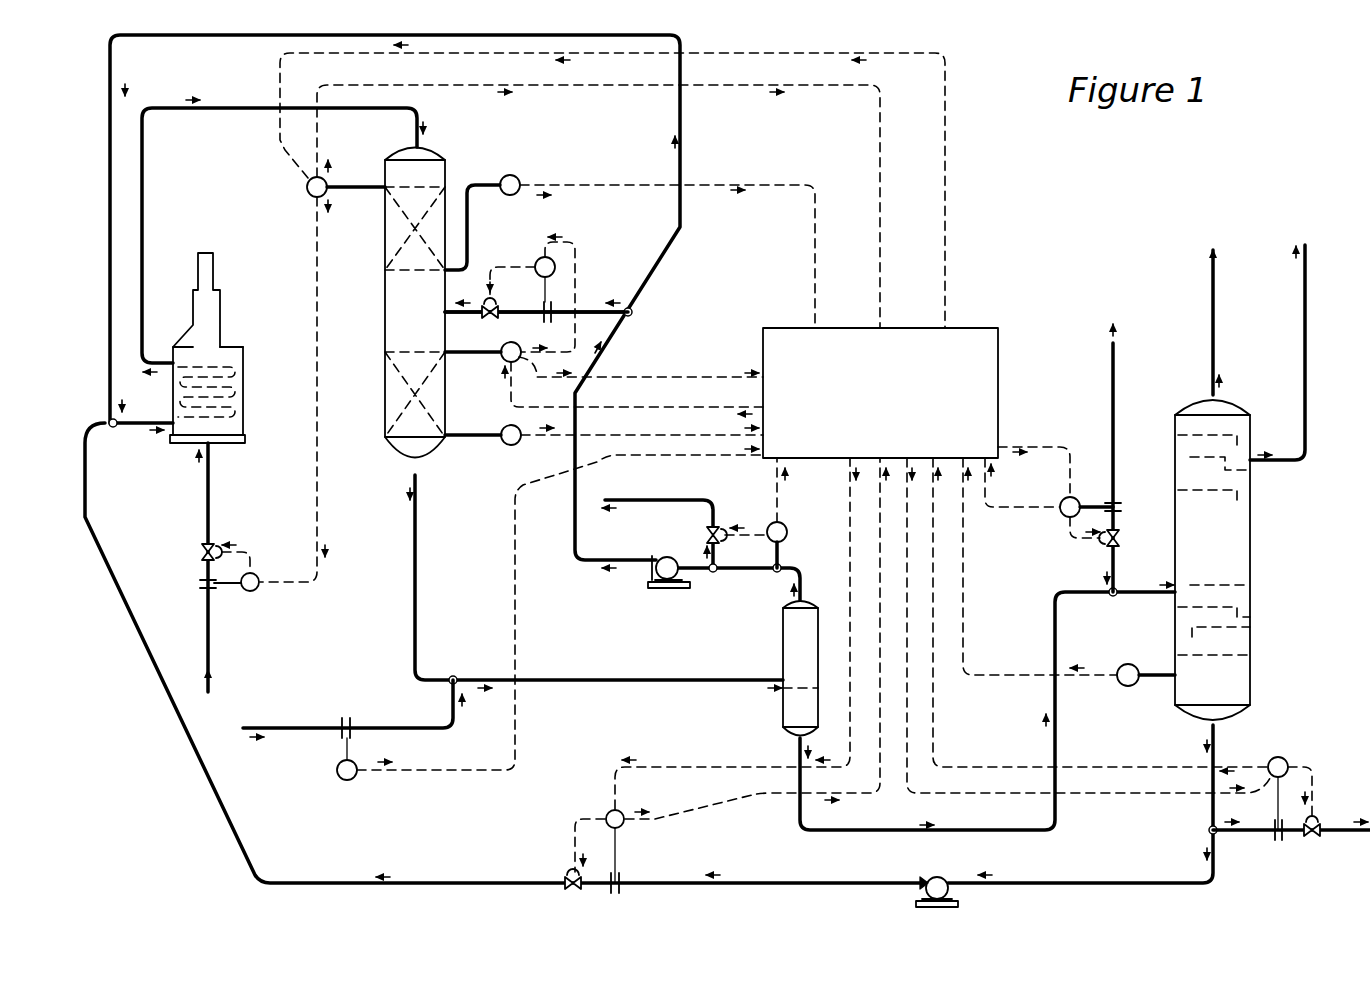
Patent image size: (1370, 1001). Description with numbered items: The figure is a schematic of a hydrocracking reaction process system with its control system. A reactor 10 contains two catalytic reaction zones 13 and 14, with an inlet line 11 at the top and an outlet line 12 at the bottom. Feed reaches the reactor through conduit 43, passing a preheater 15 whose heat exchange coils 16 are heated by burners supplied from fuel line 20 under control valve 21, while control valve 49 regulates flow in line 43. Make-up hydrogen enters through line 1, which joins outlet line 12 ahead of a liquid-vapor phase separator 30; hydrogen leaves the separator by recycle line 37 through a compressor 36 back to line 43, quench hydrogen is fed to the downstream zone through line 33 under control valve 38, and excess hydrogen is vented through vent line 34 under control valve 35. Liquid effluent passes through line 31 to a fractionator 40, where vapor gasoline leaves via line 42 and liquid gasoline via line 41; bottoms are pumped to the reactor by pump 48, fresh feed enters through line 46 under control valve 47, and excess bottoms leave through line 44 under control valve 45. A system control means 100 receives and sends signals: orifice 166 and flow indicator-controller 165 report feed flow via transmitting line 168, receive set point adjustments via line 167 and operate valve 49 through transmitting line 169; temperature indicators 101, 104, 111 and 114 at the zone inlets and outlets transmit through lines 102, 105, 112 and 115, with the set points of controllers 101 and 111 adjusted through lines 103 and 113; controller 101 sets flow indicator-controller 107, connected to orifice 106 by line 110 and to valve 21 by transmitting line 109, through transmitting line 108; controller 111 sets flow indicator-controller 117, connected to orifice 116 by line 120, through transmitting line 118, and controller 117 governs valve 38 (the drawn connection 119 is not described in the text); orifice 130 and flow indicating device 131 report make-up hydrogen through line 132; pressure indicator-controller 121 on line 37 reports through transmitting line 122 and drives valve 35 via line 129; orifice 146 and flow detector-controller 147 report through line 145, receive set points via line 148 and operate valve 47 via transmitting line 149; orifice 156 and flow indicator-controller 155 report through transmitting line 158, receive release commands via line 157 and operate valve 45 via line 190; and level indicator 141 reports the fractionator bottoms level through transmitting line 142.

The make-up hydrogen line 1 is at (298, 733).
The reactor 10 is at (448, 152).
The inlet line 11 is at (419, 116).
The outlet line 12 is at (413, 540).
The reaction zone 13 is at (410, 232).
The reaction zone 14 is at (410, 410).
The preheater 15 is at (232, 338).
The heat exchange coils 16 is at (226, 387).
The fuel line 20 is at (210, 498).
The control valve 21 is at (201, 552).
The liquid-vapor phase separator 30 is at (782, 640).
The line 31 is at (798, 756).
The quench hydrogen line 33 is at (458, 316).
The hydrogen vent line 34 is at (650, 499).
The control valve 35 is at (704, 532).
The compressor 36 is at (672, 590).
The hydrogen recycle line 37 is at (205, 37).
The control valve 38 is at (487, 302).
The fractionator 40 is at (1255, 560).
The line 41 is at (1308, 376).
The line 42 is at (1218, 335).
The conduit 43 is at (95, 470).
The line 44 is at (1240, 838).
The control valve 45 is at (1322, 820).
The line 46 is at (1118, 376).
The control valve 47 is at (1122, 546).
The pump 48 is at (942, 877).
The control valve 49 is at (567, 872).
The system control means 100 is at (970, 328).
The temperature indicator-controller 101 is at (307, 198).
The transmitting line 102 is at (321, 142).
The transmitting line 103 is at (272, 140).
The temperature indicator 104 is at (512, 177).
The transmitting line 105 is at (812, 295).
The orifice 106 is at (203, 592).
The flow indicator-controller 107 is at (256, 591).
The transmitting line 108 is at (328, 505).
The transmitting line 109 is at (254, 556).
The line 110 is at (233, 588).
The temperature indicator-controller 111 is at (500, 360).
The transmitting line 112 is at (672, 377).
The transmitting line 113 is at (672, 407).
The temperature indicator 114 is at (504, 427).
The transmitting line 115 is at (672, 435).
The orifice 116 is at (547, 322).
The flow indicator-controller 117 is at (536, 258).
The transmitting line 118 is at (578, 283).
The valve control signal line 119 is at (520, 265).
The line 120 is at (545, 298).
The pressure indicator-controller 121 is at (784, 530).
The transmitting line 122 is at (772, 500).
The line 129 is at (757, 545).
The orifice 130 is at (344, 716).
The flow indicating device 131 is at (339, 779).
The line 132 is at (510, 550).
The level indicator 141 is at (1122, 688).
The transmitting line 142 is at (970, 650).
The line 145 is at (1005, 505).
The orifice 146 is at (1121, 505).
The flow detector-controller 147 is at (1062, 516).
The line 148 is at (1025, 447).
The transmitting line 149 is at (1078, 546).
The flow indicator-controller 155 is at (1283, 757).
The orifice 156 is at (1272, 822).
The line 157 is at (975, 802).
The transmitting line 158 is at (975, 765).
The flow indicator-controller 165 is at (624, 830).
The orifice 166 is at (623, 880).
The line 167 is at (848, 500).
The transmitting line 168 is at (740, 800).
The transmitting line 169 is at (568, 830).
The line 190 is at (1318, 782).